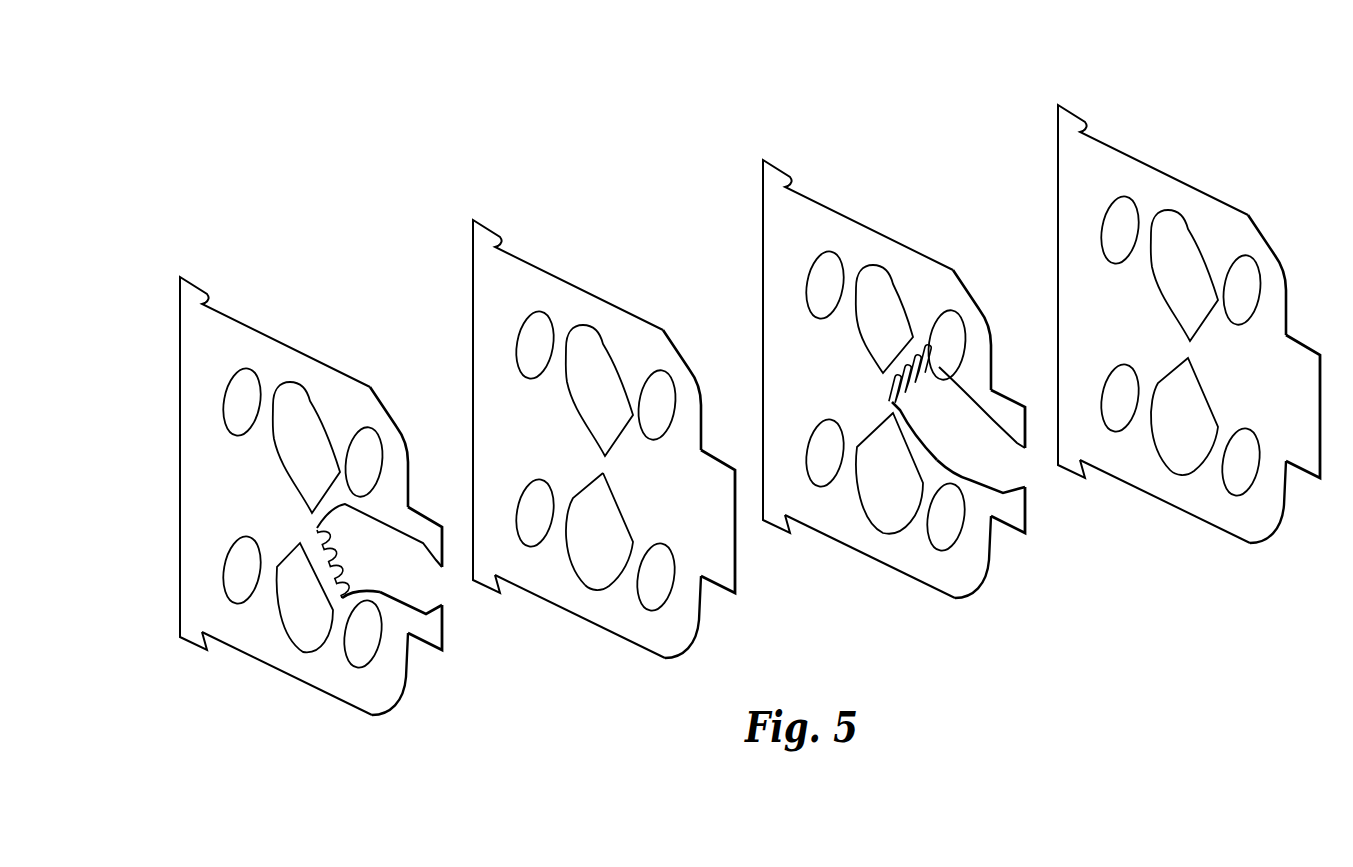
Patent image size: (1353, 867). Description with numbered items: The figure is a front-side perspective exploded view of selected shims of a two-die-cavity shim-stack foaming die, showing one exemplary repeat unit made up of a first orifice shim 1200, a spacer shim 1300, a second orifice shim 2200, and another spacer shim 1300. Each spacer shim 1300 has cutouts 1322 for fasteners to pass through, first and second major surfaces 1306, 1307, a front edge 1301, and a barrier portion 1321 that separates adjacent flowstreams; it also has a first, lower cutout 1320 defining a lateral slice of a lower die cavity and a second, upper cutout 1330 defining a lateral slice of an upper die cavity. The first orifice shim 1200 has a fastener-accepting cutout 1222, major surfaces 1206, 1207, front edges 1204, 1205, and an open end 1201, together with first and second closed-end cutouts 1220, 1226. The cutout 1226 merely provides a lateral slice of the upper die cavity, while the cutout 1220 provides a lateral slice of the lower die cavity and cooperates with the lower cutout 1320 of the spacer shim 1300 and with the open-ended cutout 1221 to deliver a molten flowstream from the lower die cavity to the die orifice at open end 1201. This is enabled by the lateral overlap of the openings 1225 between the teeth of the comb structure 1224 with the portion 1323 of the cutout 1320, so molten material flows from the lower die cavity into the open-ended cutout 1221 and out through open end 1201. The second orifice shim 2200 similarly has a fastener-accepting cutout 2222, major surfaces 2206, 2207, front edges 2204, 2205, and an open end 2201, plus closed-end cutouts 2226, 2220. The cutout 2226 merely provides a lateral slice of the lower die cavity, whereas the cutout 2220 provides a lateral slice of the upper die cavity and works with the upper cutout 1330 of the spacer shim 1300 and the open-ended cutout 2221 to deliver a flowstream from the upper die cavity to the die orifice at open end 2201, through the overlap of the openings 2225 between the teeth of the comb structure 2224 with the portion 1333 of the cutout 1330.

The first orifice shim 1200 is at (199, 262).
The open end 1201 is at (379, 577).
The front edge 1204 is at (425, 537).
The front edge 1205 is at (425, 627).
The major surface 1206 is at (390, 674).
The major surface 1207 is at (287, 673).
The first closed-end cutout 1220 is at (305, 597).
The open-ended cutout 1221 is at (379, 559).
The fastener-accepting cutout 1222 is at (241, 401).
The comb structure 1224 is at (333, 564).
The openings 1225 is at (361, 594).
The second closed-end cutout 1226 is at (306, 447).
The spacer shim 1300 is at (487, 206).
The front edge 1301 is at (1303, 406).
The first major surface 1306 is at (1165, 501).
The second major surface 1307 is at (683, 617).
The first lower cutout 1320 is at (599, 531).
The barrier portion 1321 is at (1267, 275).
The cutout 1322 is at (534, 344).
The portion of cutout 1323 is at (609, 531).
The second upper cutout 1330 is at (599, 390).
The portion of cutout 1333 is at (1184, 275).
The second orifice shim 2200 is at (784, 140).
The open end 2201 is at (957, 420).
The front edge 2204 is at (1008, 419).
The front edge 2205 is at (1008, 510).
The major surface 2206 is at (973, 557).
The major surface 2207 is at (870, 556).
The second closed-end cutout 2220 is at (884, 319).
The open-ended cutout 2221 is at (957, 400).
The fastener-accepting cutout 2222 is at (824, 284).
The comb structure 2224 is at (929, 355).
The openings 2225 is at (914, 431).
The first closed-end cutout 2226 is at (889, 473).